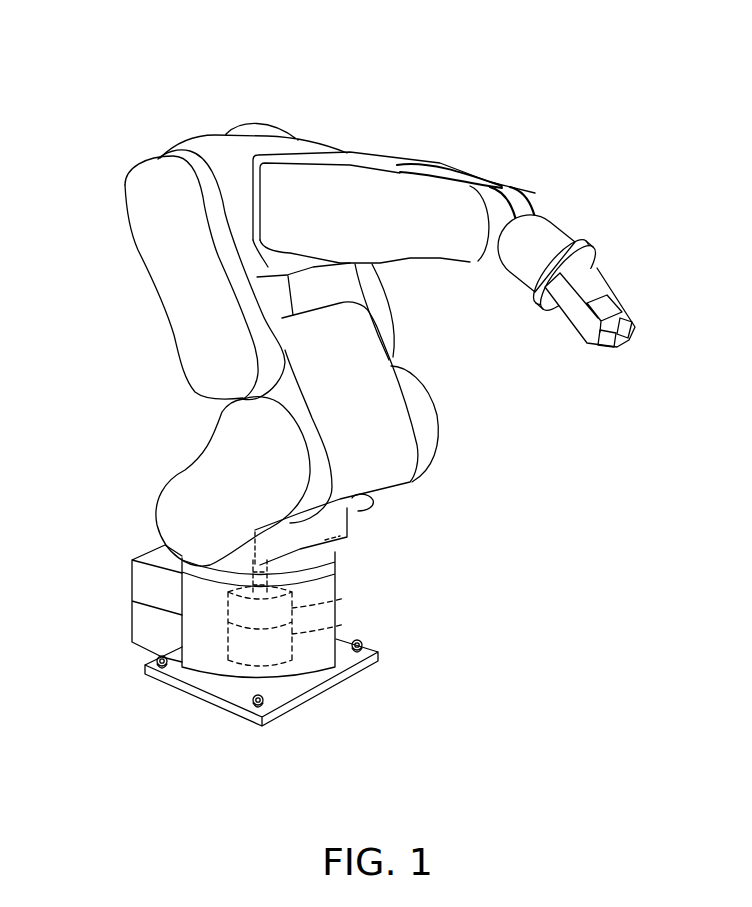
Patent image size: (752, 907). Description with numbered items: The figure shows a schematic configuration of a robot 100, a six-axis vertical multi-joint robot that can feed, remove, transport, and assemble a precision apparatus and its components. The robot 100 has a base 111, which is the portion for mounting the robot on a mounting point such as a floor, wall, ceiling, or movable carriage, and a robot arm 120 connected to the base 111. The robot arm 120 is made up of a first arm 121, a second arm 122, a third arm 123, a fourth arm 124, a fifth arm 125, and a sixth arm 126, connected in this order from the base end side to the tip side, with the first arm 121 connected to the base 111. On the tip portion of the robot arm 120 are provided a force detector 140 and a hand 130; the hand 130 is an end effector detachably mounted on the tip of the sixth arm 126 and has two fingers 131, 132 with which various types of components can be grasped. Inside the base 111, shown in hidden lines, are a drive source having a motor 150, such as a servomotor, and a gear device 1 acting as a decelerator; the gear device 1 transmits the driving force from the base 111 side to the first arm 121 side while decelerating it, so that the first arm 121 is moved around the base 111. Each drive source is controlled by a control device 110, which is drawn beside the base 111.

The gear device 1 is at (343, 587).
The robot 100 is at (459, 115).
The control device 110 is at (143, 612).
The base 111 is at (294, 686).
The robot arm 120 is at (375, 128).
The first arm 121 is at (183, 514).
The second arm 122 is at (180, 292).
The third arm 123 is at (213, 148).
The fourth arm 124 is at (282, 200).
The fifth arm 125 is at (524, 197).
The sixth arm 126 is at (542, 230).
The hand 130 is at (613, 288).
The finger 131 is at (633, 335).
The finger 132 is at (605, 353).
The force detector 140 is at (565, 250).
The motor 150 is at (343, 623).